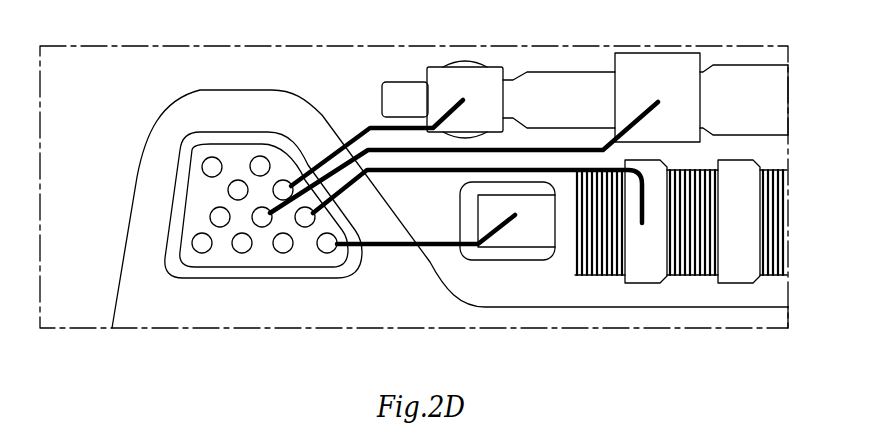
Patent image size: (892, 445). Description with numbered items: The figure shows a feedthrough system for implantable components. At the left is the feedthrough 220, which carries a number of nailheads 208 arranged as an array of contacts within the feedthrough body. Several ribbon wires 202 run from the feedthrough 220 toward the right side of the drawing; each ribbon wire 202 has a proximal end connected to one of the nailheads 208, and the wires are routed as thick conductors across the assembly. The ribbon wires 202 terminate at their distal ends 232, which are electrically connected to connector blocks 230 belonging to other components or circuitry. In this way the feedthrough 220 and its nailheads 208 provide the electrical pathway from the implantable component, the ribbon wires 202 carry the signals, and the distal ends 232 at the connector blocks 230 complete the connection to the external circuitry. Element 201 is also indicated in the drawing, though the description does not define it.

The connector body 201 is at (324, 186).
The ribbon wires 202 is at (413, 127).
The nailheads 208 is at (213, 167).
The feedthrough 220 is at (177, 208).
The connector blocks 230 is at (703, 100).
The distal ends 232 is at (640, 120).